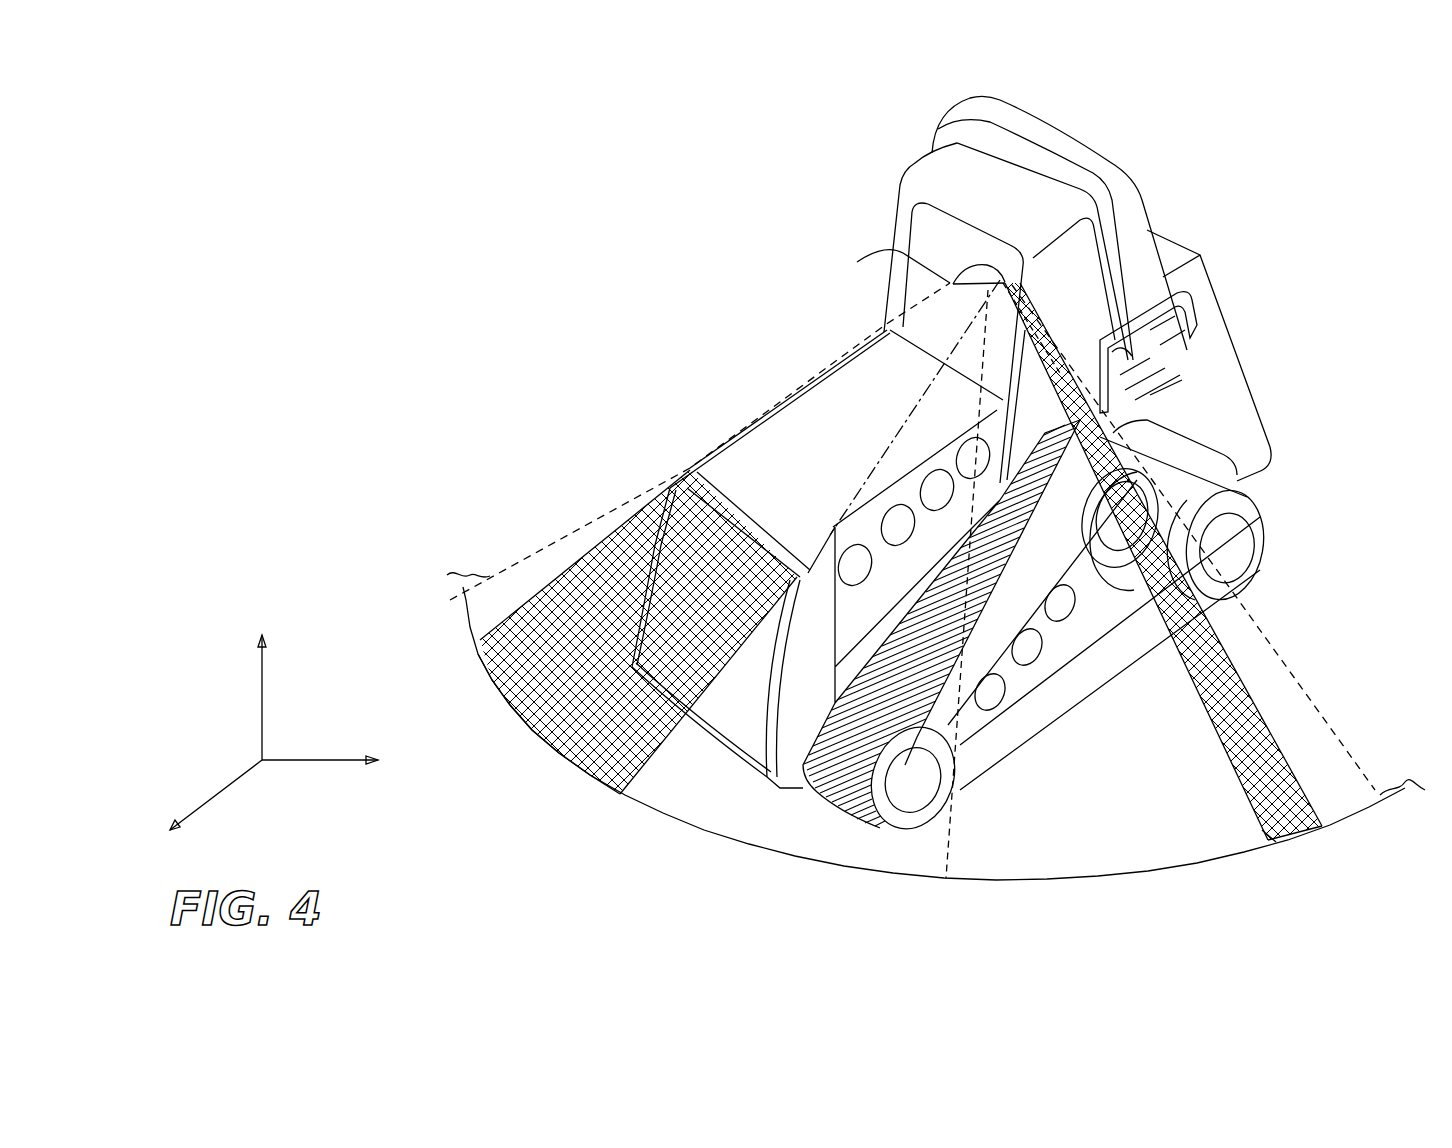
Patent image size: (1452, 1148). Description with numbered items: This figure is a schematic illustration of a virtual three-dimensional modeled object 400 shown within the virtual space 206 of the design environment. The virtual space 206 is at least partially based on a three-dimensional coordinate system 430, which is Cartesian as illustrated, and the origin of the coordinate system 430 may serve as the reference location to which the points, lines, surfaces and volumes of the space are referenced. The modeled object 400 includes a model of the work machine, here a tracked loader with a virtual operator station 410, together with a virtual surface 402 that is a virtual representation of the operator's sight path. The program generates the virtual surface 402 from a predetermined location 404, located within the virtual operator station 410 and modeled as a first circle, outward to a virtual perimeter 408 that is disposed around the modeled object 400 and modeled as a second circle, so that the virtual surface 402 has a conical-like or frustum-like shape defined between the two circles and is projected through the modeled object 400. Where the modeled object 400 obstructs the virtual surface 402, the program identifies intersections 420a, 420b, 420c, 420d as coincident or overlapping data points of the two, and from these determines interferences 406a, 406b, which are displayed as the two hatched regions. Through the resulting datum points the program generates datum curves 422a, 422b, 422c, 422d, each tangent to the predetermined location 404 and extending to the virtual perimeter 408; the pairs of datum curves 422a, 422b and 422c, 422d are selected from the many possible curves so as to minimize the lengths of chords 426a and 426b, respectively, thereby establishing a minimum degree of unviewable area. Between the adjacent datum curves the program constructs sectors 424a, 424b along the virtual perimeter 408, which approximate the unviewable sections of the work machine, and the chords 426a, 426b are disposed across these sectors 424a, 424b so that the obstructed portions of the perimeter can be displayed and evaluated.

The virtual space 206 is at (1370, 190).
The virtual three-dimensional modeled object 400 is at (746, 122).
The virtual surface 402 is at (1312, 782).
The predetermined location 404 is at (880, 252).
The interference 406a is at (1262, 777).
The interference 406b is at (527, 684).
The virtual perimeter 408 is at (930, 878).
The virtual operator station 410 is at (912, 150).
The intersection 420a is at (676, 464).
The intersection 420b is at (798, 560).
The intersection 420c is at (1005, 332).
The intersection 420d is at (1033, 315).
The datum curve 422a is at (583, 560).
The datum curve 422b is at (640, 768).
The datum curve 422c is at (1217, 720).
The datum curve 422d is at (1258, 700).
The sector 424a is at (592, 740).
The sector 424b is at (1310, 832).
The chord 426a is at (610, 790).
The chord 426b is at (1290, 840).
The three-dimensional coordinate system 430 is at (298, 602).